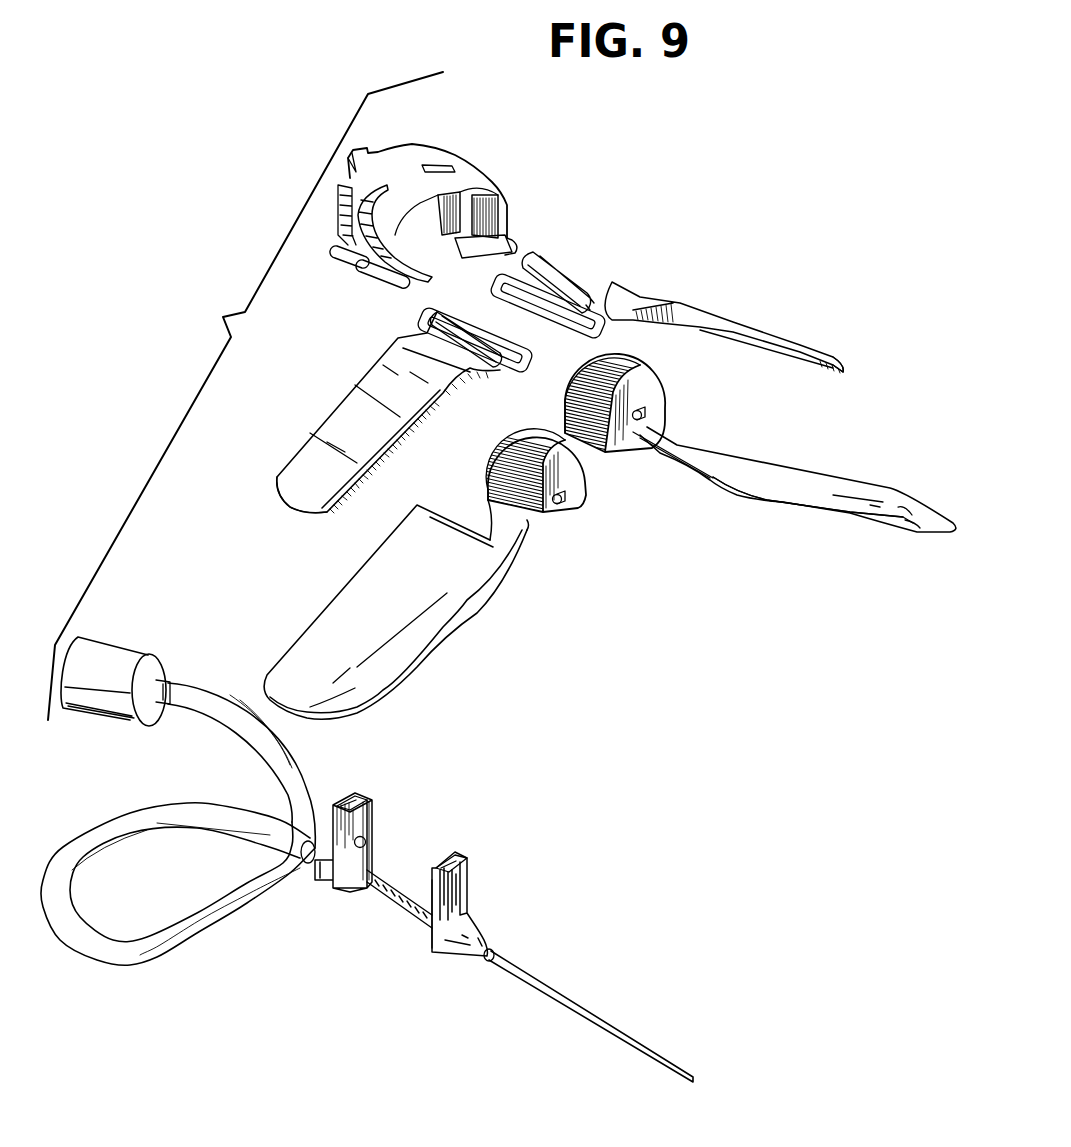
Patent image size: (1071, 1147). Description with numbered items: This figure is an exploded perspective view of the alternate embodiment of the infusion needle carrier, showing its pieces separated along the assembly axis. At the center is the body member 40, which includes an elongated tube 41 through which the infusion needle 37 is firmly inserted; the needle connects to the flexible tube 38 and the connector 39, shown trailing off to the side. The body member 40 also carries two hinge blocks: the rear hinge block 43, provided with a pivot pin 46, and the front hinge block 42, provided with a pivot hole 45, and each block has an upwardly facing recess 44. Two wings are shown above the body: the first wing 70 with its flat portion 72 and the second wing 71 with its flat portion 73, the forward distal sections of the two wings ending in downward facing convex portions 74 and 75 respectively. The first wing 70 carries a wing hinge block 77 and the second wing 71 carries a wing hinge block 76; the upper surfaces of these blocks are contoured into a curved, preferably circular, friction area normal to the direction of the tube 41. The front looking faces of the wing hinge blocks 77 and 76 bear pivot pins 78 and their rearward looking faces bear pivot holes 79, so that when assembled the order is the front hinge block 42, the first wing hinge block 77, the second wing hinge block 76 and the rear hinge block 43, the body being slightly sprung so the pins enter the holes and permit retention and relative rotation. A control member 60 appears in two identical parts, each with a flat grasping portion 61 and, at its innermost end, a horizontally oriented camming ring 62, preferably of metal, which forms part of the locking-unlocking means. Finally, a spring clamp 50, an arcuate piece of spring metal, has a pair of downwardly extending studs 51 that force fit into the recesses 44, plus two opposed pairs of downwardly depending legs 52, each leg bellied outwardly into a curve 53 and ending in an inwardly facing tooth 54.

The infusion needle 37 is at (600, 1018).
The flexible tube 38 is at (205, 700).
The connector 39 is at (108, 650).
The body member 40 is at (402, 871).
The tube 41 is at (392, 900).
The front hinge block 42 is at (432, 945).
The rear hinge block 43 is at (338, 877).
The upwardly facing recess 44 is at (455, 850).
The pivot hole 45 is at (428, 880).
The pivot pin 46 is at (366, 838).
The spring clamp 50 is at (476, 157).
The downwardly extending stud 51 is at (448, 202).
The downwardly depending leg 52 is at (385, 235).
The curve 53 is at (512, 250).
The inwardly facing tooth 54 is at (485, 262).
The control member 60 is at (338, 420).
The flat grasping portion 61 is at (313, 495).
The camming ring 62 is at (540, 312).
The first wing 70 is at (792, 449).
The second wing 71 is at (447, 575).
The flat portion 72 is at (772, 496).
The flat portion 73 is at (465, 595).
The convex portion 74 is at (913, 522).
The convex portion 75 is at (368, 688).
The wing hinge block 76 is at (580, 500).
The wing hinge block 77 is at (618, 452).
The pivot pin 78 is at (558, 504).
The pivot hole 79 is at (511, 462).